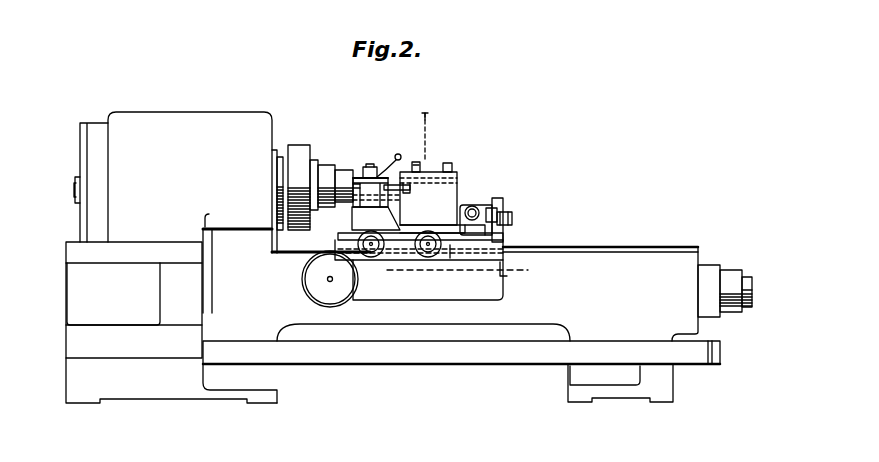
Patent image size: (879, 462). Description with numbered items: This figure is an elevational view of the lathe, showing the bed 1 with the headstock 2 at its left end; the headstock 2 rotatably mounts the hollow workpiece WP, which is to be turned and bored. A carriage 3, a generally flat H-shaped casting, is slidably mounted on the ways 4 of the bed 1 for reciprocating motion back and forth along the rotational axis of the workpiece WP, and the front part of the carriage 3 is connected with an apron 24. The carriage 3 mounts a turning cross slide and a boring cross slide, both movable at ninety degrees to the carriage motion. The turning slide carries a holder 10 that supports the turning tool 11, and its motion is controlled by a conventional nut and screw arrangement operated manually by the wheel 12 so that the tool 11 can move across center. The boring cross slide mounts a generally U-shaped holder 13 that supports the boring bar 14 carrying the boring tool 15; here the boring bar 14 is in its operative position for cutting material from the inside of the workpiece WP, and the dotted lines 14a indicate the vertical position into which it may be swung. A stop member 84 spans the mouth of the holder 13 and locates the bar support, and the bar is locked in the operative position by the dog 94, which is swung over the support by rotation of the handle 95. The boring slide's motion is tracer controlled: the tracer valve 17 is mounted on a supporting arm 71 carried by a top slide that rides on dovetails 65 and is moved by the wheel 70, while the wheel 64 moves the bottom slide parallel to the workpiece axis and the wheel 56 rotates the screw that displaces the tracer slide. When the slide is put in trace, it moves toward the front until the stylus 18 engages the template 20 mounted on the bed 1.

The bed 1 is at (652, 274).
The headstock 2 is at (175, 112).
The carriage 3 is at (503, 242).
The ways 4 is at (636, 248).
The holder 10 is at (357, 176).
The turning tool 11 is at (356, 190).
The wheel 12 is at (373, 257).
The holder 13 is at (450, 197).
The boring bar 14 is at (393, 176).
The dotted lines 14a is at (428, 125).
The boring tool 15 is at (351, 184).
The tracer valve 17 is at (505, 202).
The stylus 18 is at (506, 274).
The template 20 is at (526, 268).
The apron 24 is at (391, 297).
The wheel 56 is at (452, 240).
The wheel 64 is at (505, 213).
The dovetails 65 is at (410, 190).
The wheel 70 is at (472, 210).
The supporting arm 71 is at (512, 218).
The stop member 84 is at (452, 167).
The dog 94 is at (421, 172).
The handle 95 is at (423, 167).
The workpiece WP is at (357, 169).